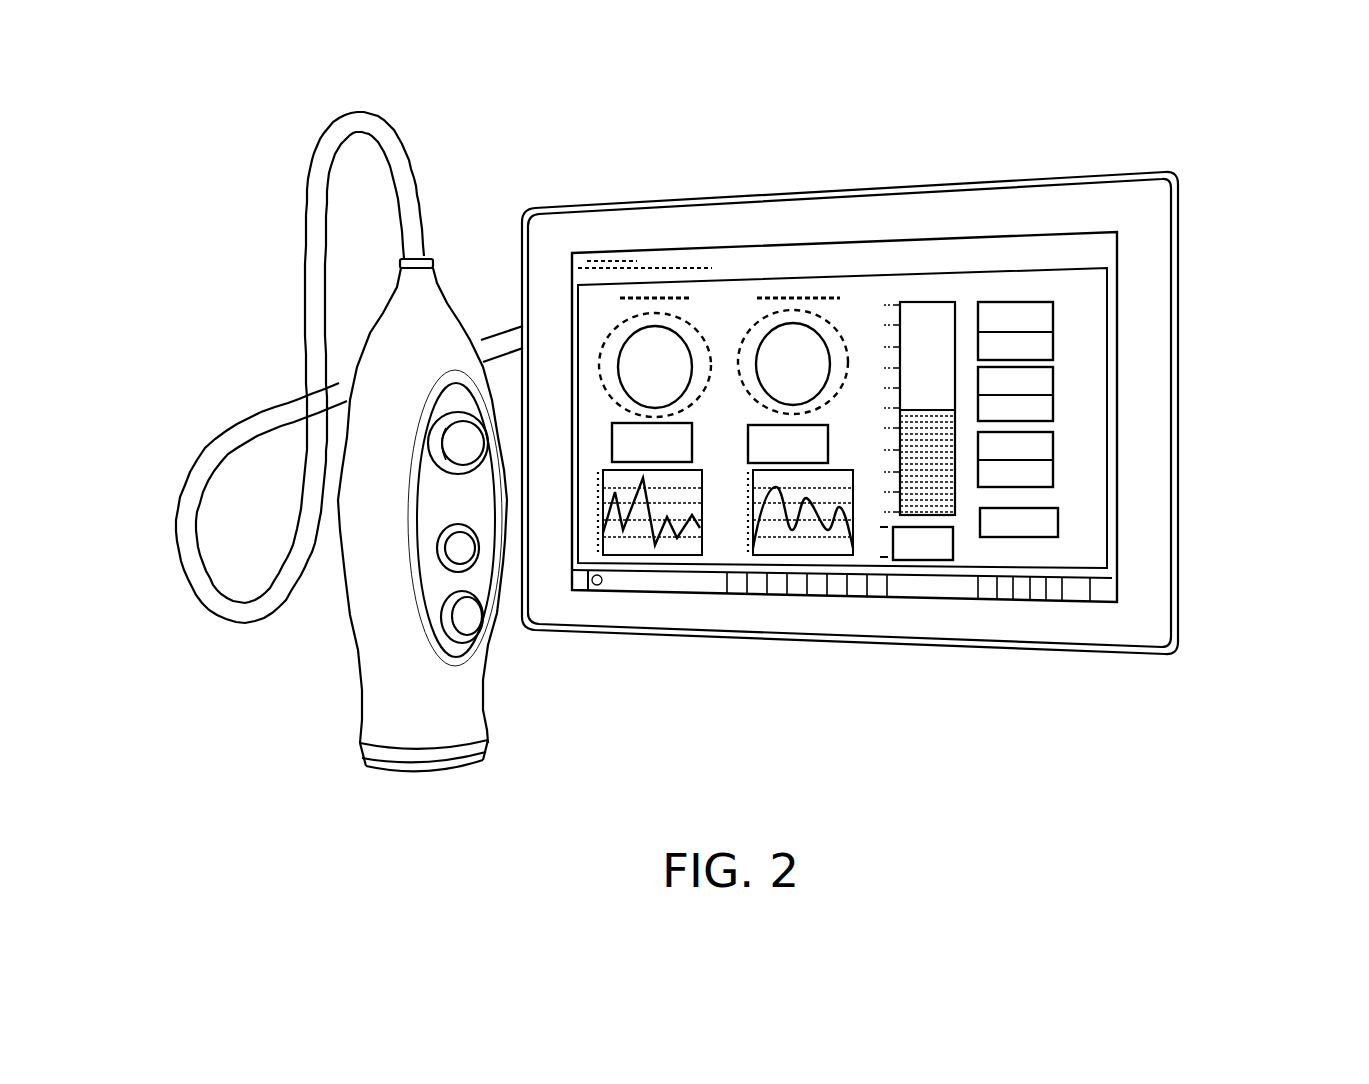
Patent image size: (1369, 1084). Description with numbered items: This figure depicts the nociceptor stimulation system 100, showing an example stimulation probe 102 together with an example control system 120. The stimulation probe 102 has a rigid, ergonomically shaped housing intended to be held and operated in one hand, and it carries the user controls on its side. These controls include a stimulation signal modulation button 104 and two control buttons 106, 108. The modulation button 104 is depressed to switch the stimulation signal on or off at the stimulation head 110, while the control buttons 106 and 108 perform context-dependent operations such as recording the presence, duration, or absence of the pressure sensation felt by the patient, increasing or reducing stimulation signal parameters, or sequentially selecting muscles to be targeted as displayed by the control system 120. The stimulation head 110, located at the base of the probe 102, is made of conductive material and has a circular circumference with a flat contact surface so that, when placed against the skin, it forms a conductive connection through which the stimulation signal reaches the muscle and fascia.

The nociceptor stimulation system 100 is at (857, 147).
The stimulation probe 102 is at (352, 332).
The stimulation signal modulation button 104 is at (430, 443).
The control button 106 is at (437, 546).
The control button 108 is at (440, 616).
The stimulation head 110 is at (357, 750).
The control system 120 is at (1167, 333).